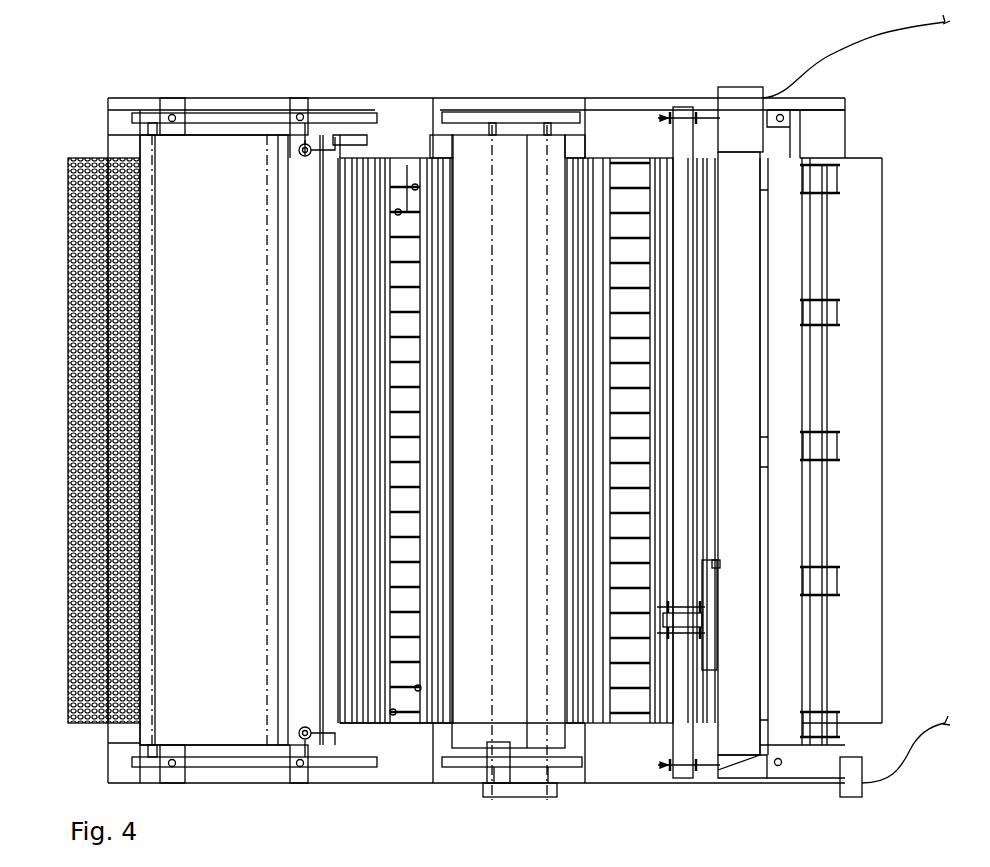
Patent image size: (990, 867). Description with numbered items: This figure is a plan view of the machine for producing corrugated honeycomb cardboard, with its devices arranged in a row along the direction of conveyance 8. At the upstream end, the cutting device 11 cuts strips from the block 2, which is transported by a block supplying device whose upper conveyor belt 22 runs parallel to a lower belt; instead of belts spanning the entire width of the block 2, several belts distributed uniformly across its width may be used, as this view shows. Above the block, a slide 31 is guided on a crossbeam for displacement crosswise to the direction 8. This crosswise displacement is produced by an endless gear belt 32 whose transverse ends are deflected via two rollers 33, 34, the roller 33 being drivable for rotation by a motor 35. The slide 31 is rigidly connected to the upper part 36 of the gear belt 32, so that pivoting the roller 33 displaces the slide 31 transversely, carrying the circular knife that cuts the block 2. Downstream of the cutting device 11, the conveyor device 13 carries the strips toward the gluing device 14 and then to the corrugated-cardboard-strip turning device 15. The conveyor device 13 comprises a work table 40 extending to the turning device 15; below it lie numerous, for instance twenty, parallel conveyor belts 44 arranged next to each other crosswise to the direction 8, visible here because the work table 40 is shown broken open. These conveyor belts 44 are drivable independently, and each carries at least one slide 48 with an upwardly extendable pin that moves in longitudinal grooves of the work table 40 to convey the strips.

The block 2 is at (880, 385).
The direction of conveyance 8 is at (342, 788).
The cutting device 11 is at (722, 88).
The conveyor device 13 is at (627, 157).
The gluing device 14 is at (505, 105).
The corrugated-cardboard-strip turning device 15 is at (218, 130).
The conveyor belt 22 is at (945, 700).
The slide 31 is at (682, 632).
The gear belt 32 is at (685, 110).
The roller 33 is at (668, 115).
The roller 34 is at (695, 773).
The motor 35 is at (740, 96).
The upper part of the gear belt 36 is at (688, 513).
The work table 40 is at (383, 160).
The conveyor belts 44 is at (398, 208).
The slide 48 is at (418, 692).